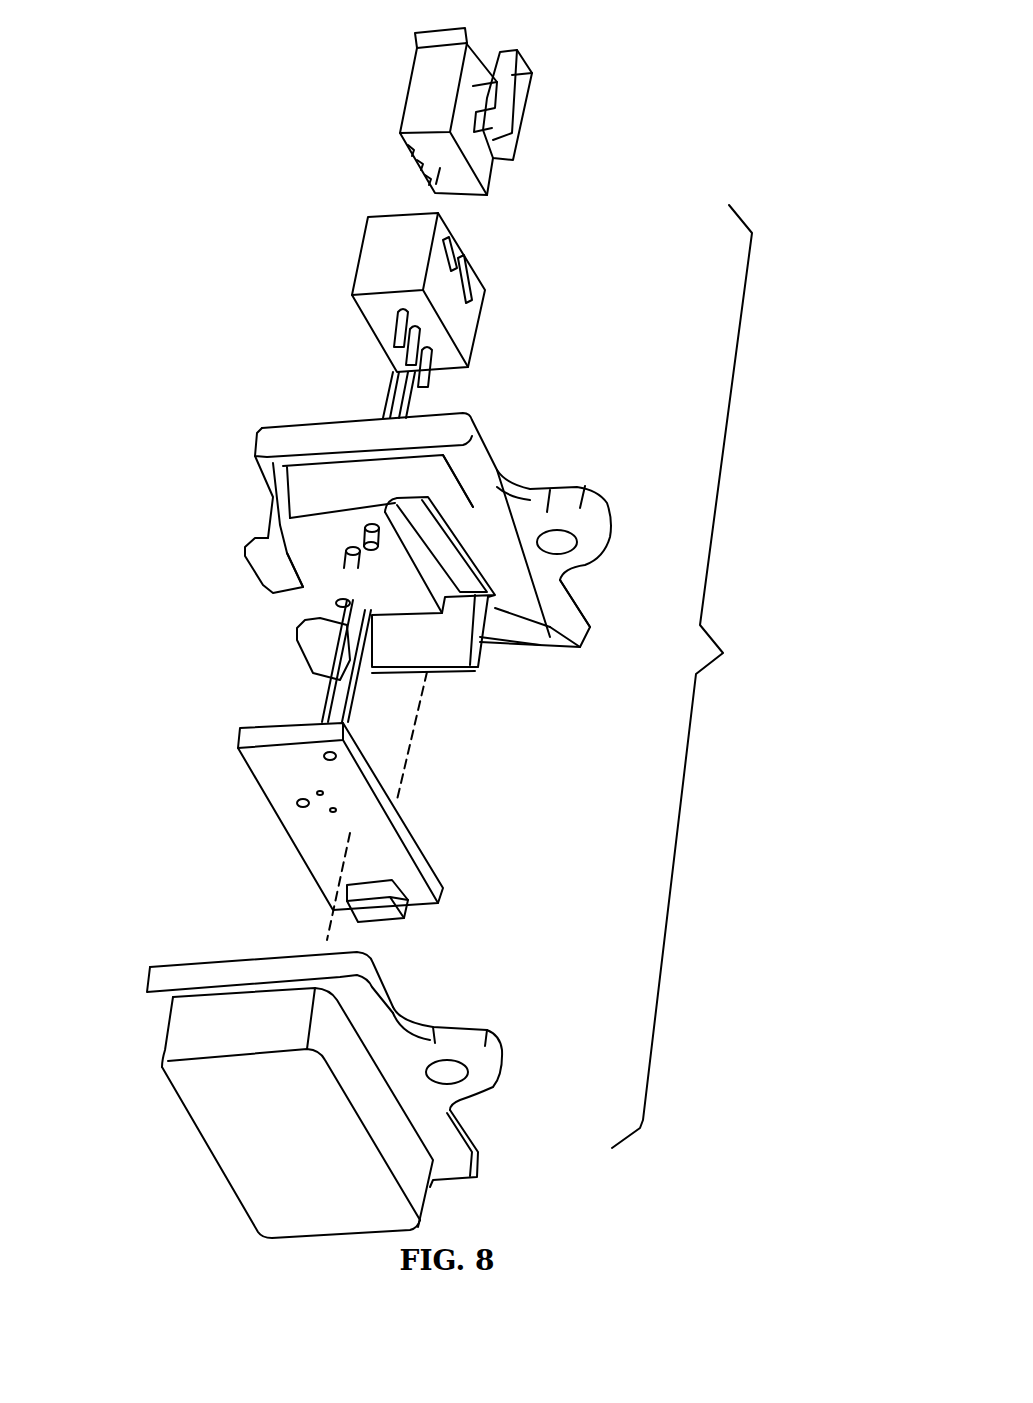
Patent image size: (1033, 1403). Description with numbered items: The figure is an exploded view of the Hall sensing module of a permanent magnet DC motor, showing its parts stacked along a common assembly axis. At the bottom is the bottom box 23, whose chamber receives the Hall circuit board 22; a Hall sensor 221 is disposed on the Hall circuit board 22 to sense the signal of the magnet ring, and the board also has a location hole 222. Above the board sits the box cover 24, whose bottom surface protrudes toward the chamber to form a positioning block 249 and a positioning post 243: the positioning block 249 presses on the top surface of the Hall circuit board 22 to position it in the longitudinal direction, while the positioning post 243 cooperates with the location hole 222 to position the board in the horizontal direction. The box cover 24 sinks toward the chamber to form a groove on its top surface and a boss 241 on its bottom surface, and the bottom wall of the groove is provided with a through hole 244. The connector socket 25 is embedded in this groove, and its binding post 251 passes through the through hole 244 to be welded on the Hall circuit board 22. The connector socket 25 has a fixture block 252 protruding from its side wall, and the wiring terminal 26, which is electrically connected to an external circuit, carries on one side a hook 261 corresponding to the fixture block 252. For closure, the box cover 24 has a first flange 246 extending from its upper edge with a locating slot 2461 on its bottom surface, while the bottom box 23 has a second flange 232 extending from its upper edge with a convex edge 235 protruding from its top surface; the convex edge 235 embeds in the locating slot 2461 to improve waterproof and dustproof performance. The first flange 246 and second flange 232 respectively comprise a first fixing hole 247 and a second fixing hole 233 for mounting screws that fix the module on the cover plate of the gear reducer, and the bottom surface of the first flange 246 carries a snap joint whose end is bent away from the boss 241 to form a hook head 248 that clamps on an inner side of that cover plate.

The Hall circuit board 22 is at (398, 846).
The Hall sensor 221 is at (410, 907).
The location hole 222 is at (303, 803).
The bottom box 23 is at (510, 1036).
The second flange 232 is at (457, 1167).
The second fixing hole 233 is at (457, 1072).
The convex edge 235 is at (232, 953).
The box cover 24 is at (266, 403).
The boss 241 is at (313, 503).
The positioning post 243 is at (340, 605).
The through hole 244 is at (352, 553).
The first flange 246 is at (492, 460).
The locating slot 2461 is at (530, 609).
The first fixing hole 247 is at (557, 542).
The hook head 248 is at (260, 548).
The positioning block 249 is at (428, 672).
The connector socket 25 is at (383, 244).
The binding post 251 is at (397, 330).
The fixture block 252 is at (465, 265).
The wiring terminal 26 is at (432, 103).
The hook 261 is at (497, 130).